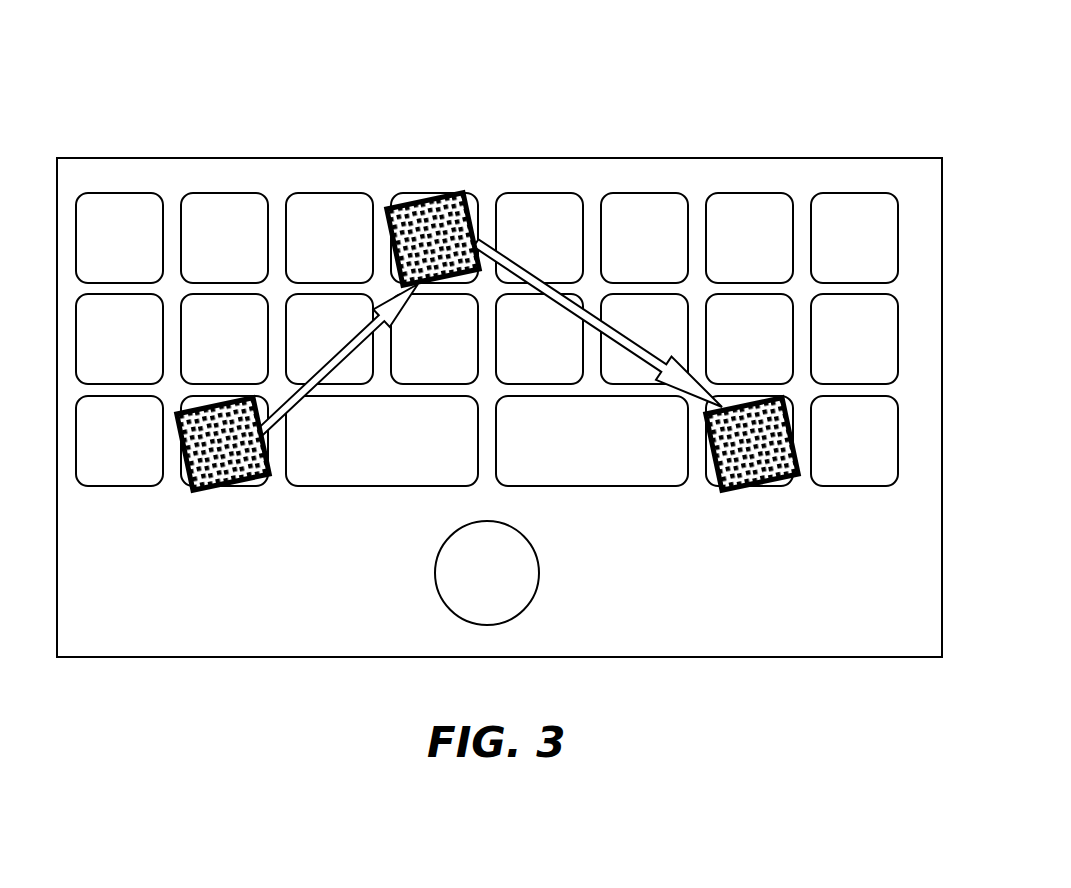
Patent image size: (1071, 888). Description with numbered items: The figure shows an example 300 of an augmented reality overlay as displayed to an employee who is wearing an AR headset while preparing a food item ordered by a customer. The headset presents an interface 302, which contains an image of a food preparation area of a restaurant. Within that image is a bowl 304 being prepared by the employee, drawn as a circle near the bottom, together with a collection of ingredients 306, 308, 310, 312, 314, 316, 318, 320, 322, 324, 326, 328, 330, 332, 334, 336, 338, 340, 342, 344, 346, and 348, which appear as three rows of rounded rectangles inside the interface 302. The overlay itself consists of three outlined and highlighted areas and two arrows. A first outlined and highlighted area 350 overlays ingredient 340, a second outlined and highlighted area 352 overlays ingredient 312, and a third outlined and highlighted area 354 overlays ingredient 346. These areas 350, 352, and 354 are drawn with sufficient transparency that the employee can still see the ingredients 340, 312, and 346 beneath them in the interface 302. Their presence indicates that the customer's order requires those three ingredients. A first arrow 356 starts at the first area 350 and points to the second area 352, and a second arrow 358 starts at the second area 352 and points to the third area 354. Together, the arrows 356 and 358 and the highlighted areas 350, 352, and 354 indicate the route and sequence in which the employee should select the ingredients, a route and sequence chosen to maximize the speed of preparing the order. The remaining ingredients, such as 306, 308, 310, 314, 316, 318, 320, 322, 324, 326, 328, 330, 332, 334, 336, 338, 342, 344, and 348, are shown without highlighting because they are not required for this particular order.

The example 300 is at (516, 46).
The interface 302 is at (868, 157).
The bowl 304 is at (538, 555).
The ingredient 306 is at (102, 235).
The ingredient 308 is at (207, 235).
The ingredient 310 is at (312, 235).
The ingredient 312 is at (402, 204).
The ingredient 314 is at (522, 235).
The ingredient 316 is at (627, 235).
The ingredient 318 is at (732, 235).
The ingredient 320 is at (837, 235).
The ingredient 322 is at (102, 336).
The ingredient 324 is at (207, 336).
The ingredient 326 is at (312, 336).
The ingredient 328 is at (417, 336).
The ingredient 330 is at (522, 336).
The ingredient 332 is at (627, 336).
The ingredient 334 is at (732, 336).
The ingredient 336 is at (837, 336).
The ingredient 338 is at (102, 438).
The ingredient 340 is at (183, 485).
The ingredient 342 is at (366, 438).
The ingredient 344 is at (574, 438).
The ingredient 346 is at (710, 483).
The ingredient 348 is at (837, 438).
The first outlined and highlighted area 350 is at (257, 485).
The second outlined and highlighted area 352 is at (462, 195).
The third outlined and highlighted area 354 is at (786, 487).
The first arrow 356 is at (300, 398).
The second arrow 358 is at (598, 265).